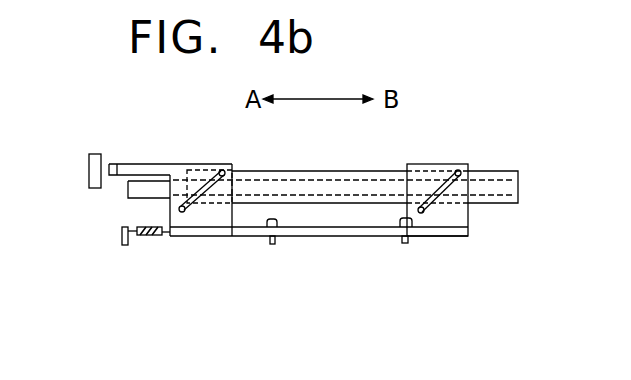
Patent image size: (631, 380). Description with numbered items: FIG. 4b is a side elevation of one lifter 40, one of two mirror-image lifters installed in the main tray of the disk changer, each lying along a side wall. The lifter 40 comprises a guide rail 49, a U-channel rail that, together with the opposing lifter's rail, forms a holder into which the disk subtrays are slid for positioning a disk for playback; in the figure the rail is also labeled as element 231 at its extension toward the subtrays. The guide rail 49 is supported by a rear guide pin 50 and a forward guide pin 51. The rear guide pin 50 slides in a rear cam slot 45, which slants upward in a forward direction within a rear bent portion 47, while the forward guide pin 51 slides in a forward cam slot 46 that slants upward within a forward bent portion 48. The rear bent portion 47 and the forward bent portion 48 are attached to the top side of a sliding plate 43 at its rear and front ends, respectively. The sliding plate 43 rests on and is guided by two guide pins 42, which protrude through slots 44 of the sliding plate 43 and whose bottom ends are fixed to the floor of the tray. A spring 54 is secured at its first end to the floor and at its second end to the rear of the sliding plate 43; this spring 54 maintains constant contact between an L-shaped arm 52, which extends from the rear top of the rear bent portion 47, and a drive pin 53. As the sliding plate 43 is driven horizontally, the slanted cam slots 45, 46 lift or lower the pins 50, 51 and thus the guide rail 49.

The lifter 40 is at (468, 262).
The guide pins 42 is at (272, 245).
The sliding plate 43 is at (340, 232).
The slots 44 is at (237, 237).
The rear cam slot 45 is at (180, 212).
The forward cam slot 46 is at (424, 212).
The rear bent portion 47 is at (208, 170).
The forward bent portion 48 is at (412, 163).
The guide rail 49 is at (518, 186).
The rear guide pin 50 is at (228, 170).
The forward guide pin 51 is at (458, 172).
The L-shaped arm 52 is at (140, 166).
The drive pin 53 is at (90, 154).
The spring 54 is at (147, 237).
The guide rail 231 is at (498, 178).